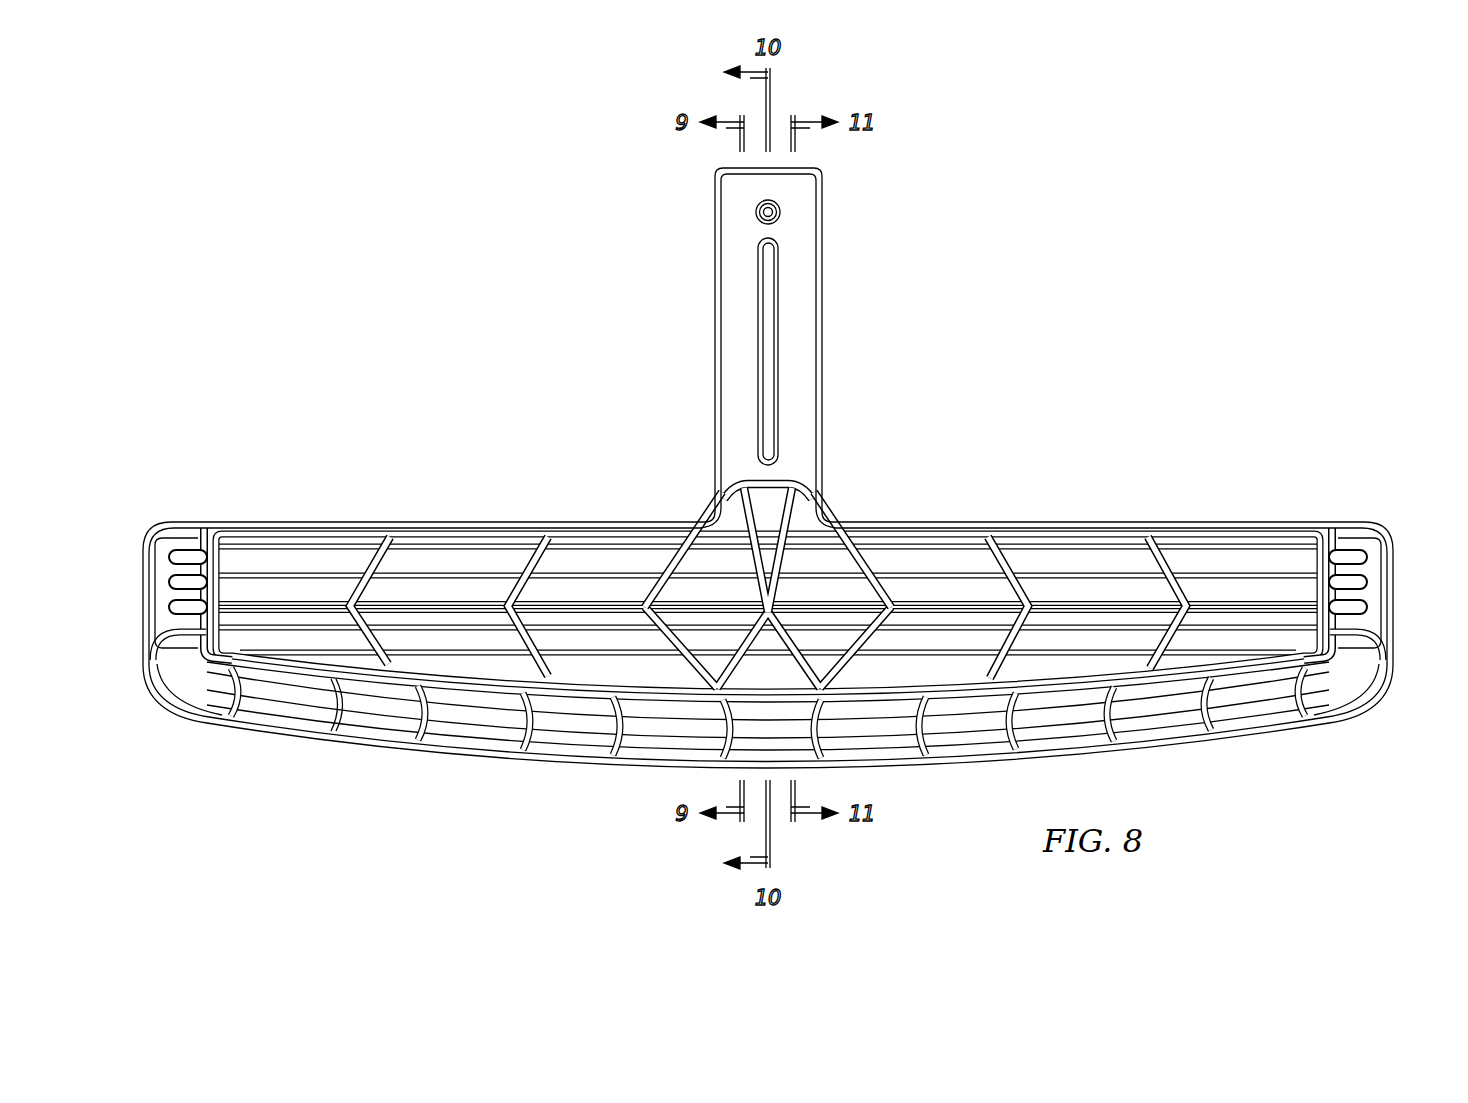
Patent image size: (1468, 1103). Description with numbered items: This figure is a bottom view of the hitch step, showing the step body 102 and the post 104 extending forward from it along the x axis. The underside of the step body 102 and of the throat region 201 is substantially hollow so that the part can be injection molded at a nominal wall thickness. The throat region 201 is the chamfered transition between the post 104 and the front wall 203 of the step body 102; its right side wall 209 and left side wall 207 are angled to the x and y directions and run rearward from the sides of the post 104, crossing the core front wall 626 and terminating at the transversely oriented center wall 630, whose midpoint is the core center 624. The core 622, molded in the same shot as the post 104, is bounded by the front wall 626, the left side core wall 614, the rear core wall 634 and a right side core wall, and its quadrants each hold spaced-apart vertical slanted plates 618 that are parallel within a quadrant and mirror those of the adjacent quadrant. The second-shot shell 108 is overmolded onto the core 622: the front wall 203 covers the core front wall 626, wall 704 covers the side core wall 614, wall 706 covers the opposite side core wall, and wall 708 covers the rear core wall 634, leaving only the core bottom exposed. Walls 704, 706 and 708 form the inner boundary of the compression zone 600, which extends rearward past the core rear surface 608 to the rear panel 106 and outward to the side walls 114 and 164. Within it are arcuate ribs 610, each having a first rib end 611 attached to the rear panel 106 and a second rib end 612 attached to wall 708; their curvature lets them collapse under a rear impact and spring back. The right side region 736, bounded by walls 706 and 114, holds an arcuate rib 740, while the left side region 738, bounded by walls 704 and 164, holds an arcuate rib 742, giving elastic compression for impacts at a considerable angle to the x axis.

The step body 102 is at (1256, 744).
The post 104 is at (714, 330).
The rear panel 106 is at (562, 773).
The shell 108 is at (480, 760).
The side wall 114 is at (145, 560).
The side wall 164 is at (1393, 560).
The throat region 201 is at (838, 482).
The front wall 203 is at (985, 528).
The left side wall 207 is at (868, 552).
The right side wall 209 is at (660, 558).
The compression zone 600 is at (252, 692).
The core rear surface 608 is at (950, 684).
The rib 610 is at (326, 692).
The first rib end 611 is at (316, 716).
The second rib end 612 is at (342, 690).
The left side core wall 614 is at (1316, 553).
The slanted plate 618 is at (366, 553).
The core 622 is at (1090, 544).
The core center 624 is at (766, 607).
The front wall 626 is at (320, 544).
The center wall 630 is at (470, 603).
The rear core wall 634 is at (1063, 678).
The wall 704 is at (1350, 568).
The wall 706 is at (210, 568).
The wall 708 is at (1082, 720).
The right side region 736 is at (185, 572).
The left side region 738 is at (1370, 606).
The arcuate rib 740 is at (162, 650).
The arcuate rib 742 is at (1362, 650).